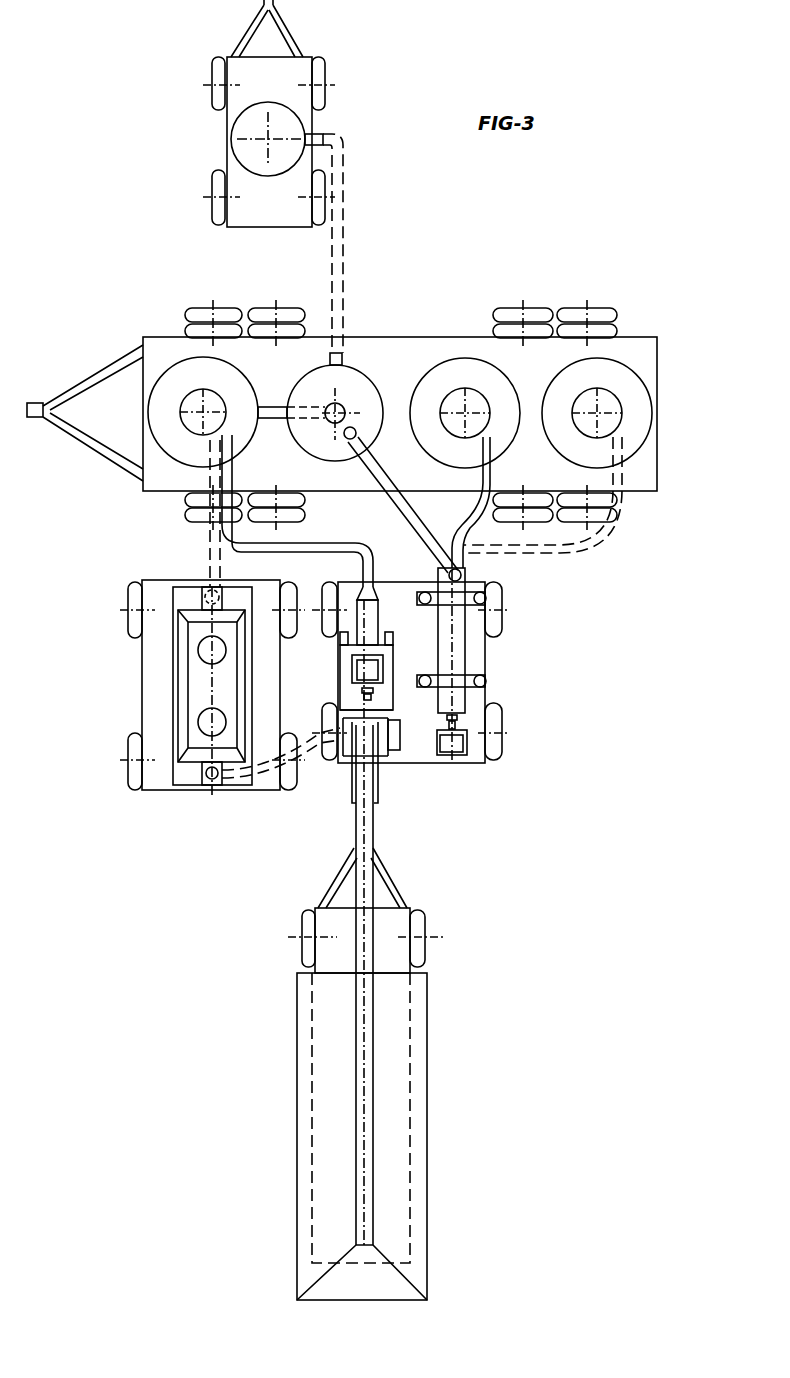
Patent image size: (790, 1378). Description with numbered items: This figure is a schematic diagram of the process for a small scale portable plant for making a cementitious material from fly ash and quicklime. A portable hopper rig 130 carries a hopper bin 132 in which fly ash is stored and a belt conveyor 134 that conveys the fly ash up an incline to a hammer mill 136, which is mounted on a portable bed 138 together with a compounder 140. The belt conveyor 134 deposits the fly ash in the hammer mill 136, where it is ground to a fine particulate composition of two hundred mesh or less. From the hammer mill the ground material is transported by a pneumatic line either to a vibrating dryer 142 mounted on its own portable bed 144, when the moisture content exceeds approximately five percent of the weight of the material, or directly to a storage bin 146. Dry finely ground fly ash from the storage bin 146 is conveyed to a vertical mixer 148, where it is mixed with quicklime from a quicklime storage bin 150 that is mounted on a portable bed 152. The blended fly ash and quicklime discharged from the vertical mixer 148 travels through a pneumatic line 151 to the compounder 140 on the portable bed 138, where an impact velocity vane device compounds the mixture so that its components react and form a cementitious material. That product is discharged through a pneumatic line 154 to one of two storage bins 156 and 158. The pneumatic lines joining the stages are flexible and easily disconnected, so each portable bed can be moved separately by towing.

The portable hopper rig 130 is at (402, 962).
The hopper bin 132 is at (402, 1127).
The belt conveyor 134 is at (367, 1075).
The hammer mill 136 is at (390, 697).
The portable bed 138 is at (478, 653).
The compounder 140 is at (457, 702).
The vibrating dryer 142 is at (190, 680).
The portable bed 144 is at (150, 647).
The storage bin 146 is at (175, 370).
The vertical mixer 148 is at (363, 385).
The quicklime storage bin 150 is at (240, 133).
The conduit 151 is at (400, 510).
The portable bed 152 is at (300, 65).
The pneumatic line 154 is at (480, 522).
The storage bin 156 is at (455, 370).
The storage bin 158 is at (637, 398).